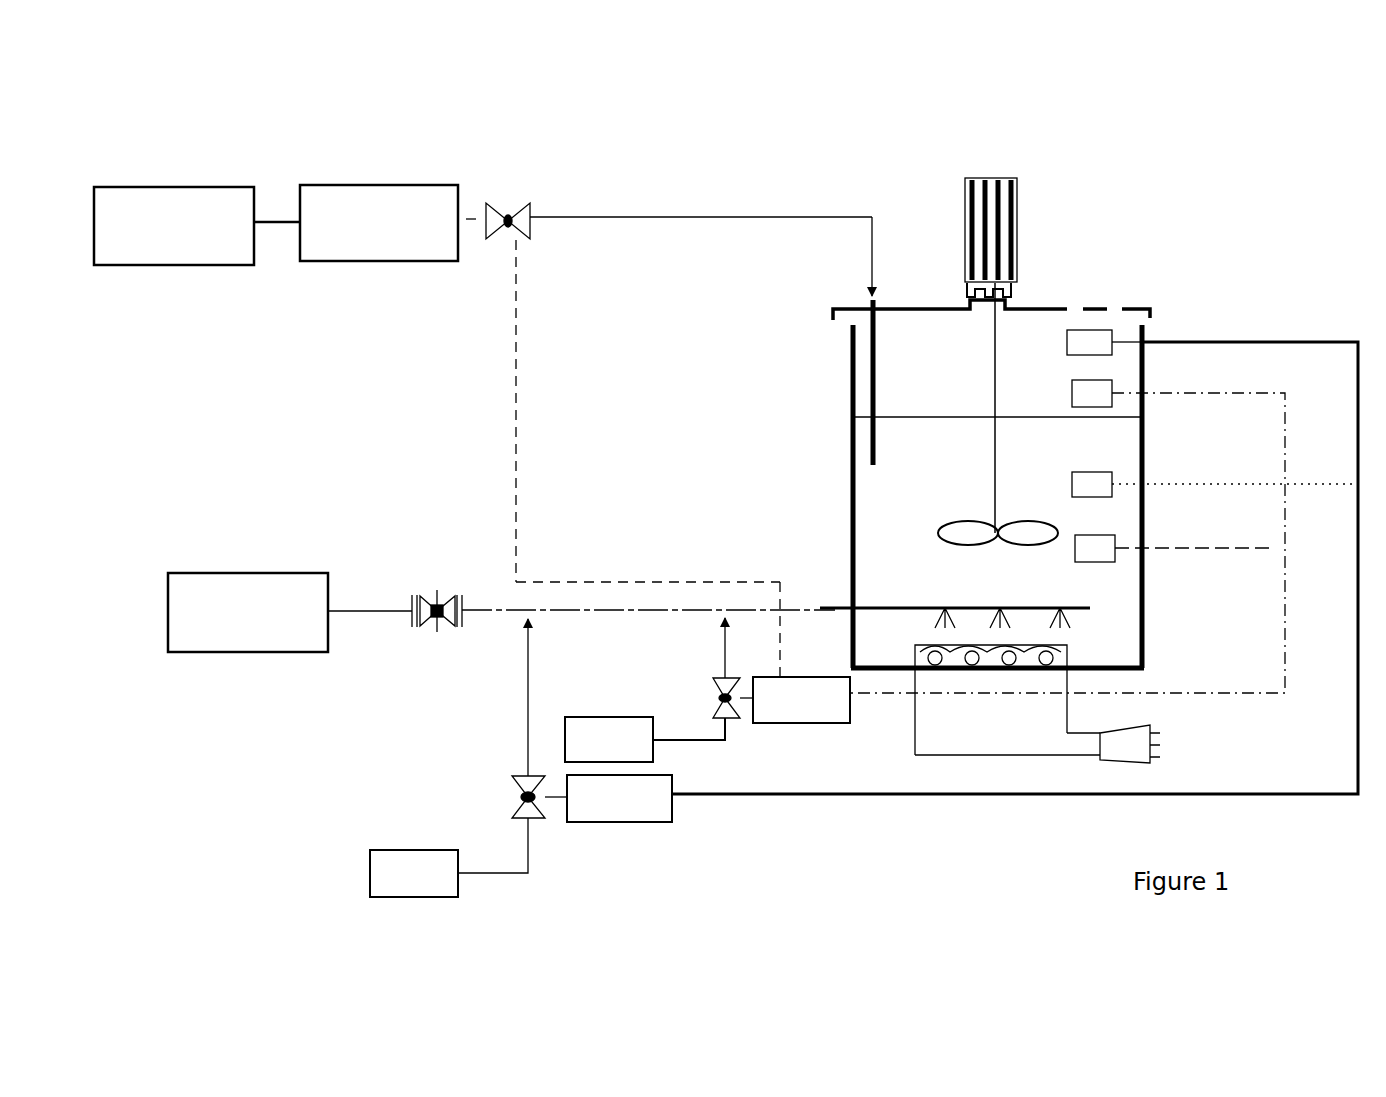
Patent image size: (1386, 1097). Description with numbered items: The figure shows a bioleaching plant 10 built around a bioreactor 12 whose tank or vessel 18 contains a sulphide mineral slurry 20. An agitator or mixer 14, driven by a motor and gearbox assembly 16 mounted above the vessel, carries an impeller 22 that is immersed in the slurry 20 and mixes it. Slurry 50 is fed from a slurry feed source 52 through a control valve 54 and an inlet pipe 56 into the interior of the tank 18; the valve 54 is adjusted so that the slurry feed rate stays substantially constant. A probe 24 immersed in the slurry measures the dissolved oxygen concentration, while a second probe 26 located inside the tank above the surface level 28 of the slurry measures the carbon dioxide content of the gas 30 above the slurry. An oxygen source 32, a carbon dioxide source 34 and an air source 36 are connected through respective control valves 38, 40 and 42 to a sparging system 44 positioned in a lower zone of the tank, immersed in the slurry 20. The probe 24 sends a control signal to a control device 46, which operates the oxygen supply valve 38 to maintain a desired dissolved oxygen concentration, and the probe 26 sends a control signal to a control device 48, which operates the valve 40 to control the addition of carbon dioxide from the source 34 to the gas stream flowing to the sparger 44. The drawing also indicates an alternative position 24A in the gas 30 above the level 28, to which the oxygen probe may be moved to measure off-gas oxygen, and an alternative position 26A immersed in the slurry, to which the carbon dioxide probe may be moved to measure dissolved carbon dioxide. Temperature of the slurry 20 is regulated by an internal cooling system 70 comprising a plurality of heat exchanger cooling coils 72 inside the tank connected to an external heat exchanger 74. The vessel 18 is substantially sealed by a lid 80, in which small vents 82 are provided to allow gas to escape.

The bioleaching plant 10 is at (1232, 285).
The bioreactor 12 is at (763, 412).
The agitator 14 is at (1045, 545).
The motor and gearbox assembly 16 is at (1008, 178).
The tank 18 is at (1152, 652).
The sulphide mineral slurry 20 is at (1060, 452).
The impeller 22 is at (938, 532).
The probe 24 is at (1113, 535).
The alternative probe position 24A is at (1110, 380).
The second probe 26 is at (1105, 330).
The alternative probe position 26A is at (1110, 472).
The surface level 28 is at (842, 390).
The gas 30 is at (945, 361).
The oxygen source 32 is at (645, 717).
The carbon dioxide source 34 is at (438, 850).
The air source 36 is at (304, 573).
The oxygen supply valve 38 is at (712, 678).
The carbon dioxide control valve 40 is at (518, 776).
The air control valve 42 is at (439, 595).
The sparging system 44 is at (1000, 607).
The control device 46 is at (825, 723).
The control device 48 is at (648, 822).
The slurry 50 is at (430, 185).
The slurry feed source 52 is at (216, 187).
The control valve 54 is at (528, 206).
The inlet pipe 56 is at (845, 350).
The internal cooling system 70 is at (884, 651).
The heat exchanger cooling coils 72 is at (1067, 650).
The external heat exchanger 74 is at (1163, 745).
The lid 80 is at (1040, 305).
The vents 82 is at (1120, 304).